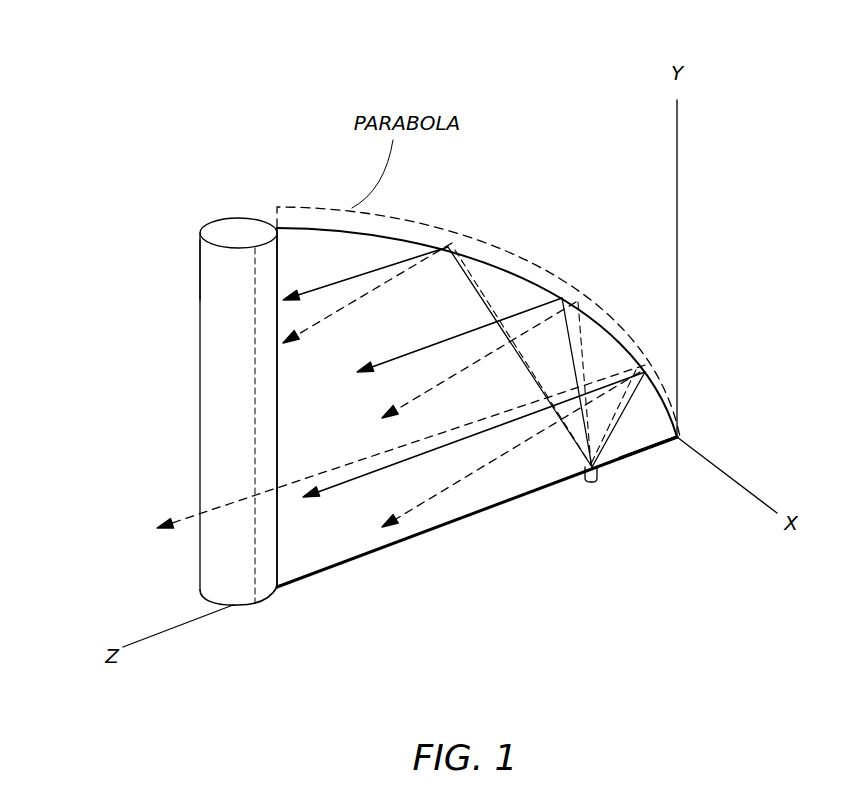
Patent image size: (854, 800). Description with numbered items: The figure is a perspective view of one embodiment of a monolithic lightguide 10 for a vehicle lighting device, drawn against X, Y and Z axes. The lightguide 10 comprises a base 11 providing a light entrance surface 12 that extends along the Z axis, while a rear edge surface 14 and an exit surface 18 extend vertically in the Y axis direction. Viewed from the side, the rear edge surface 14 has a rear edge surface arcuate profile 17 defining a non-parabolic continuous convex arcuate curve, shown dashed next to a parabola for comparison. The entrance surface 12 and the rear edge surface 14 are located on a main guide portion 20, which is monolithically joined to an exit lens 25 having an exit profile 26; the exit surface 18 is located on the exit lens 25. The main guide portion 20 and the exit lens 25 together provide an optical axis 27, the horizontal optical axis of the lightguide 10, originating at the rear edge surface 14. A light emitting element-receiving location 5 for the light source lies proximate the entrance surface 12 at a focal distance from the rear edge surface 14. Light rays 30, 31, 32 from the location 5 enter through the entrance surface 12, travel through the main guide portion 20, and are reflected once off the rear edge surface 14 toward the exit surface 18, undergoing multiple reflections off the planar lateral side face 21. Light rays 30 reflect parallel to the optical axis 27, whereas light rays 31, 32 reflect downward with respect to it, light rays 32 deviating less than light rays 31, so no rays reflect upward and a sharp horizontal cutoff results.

The light emitting element-receiving location 5 is at (603, 486).
The lightguide 10 is at (133, 305).
The base 11 is at (650, 452).
The light entrance surface 12 is at (486, 508).
The rear edge surface 14 is at (393, 230).
The rear edge surface arcuate profile 17 is at (297, 230).
The exit surface 18 is at (233, 373).
The main guide portion 20 is at (570, 310).
The planar lateral side face 21 is at (293, 557).
The exit lens 25 is at (240, 226).
The exit profile 26 is at (217, 270).
The optical axis 27 is at (178, 498).
The light rays 30 is at (353, 280).
The light rays 31 is at (422, 397).
The light rays 32 is at (400, 355).